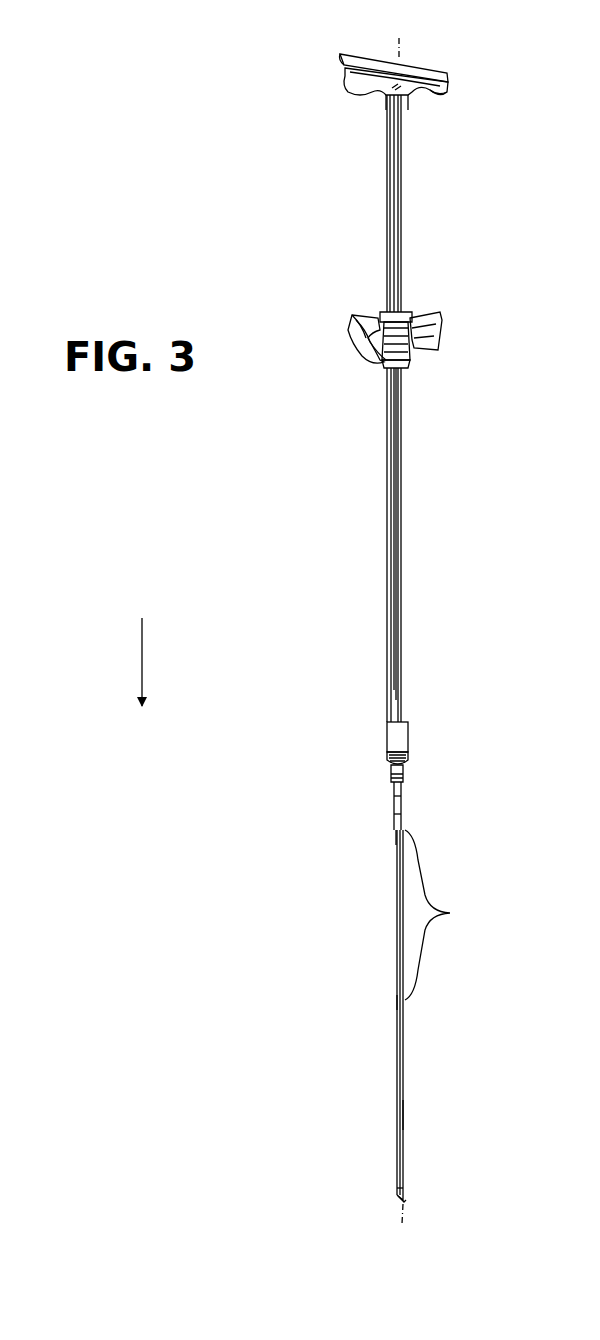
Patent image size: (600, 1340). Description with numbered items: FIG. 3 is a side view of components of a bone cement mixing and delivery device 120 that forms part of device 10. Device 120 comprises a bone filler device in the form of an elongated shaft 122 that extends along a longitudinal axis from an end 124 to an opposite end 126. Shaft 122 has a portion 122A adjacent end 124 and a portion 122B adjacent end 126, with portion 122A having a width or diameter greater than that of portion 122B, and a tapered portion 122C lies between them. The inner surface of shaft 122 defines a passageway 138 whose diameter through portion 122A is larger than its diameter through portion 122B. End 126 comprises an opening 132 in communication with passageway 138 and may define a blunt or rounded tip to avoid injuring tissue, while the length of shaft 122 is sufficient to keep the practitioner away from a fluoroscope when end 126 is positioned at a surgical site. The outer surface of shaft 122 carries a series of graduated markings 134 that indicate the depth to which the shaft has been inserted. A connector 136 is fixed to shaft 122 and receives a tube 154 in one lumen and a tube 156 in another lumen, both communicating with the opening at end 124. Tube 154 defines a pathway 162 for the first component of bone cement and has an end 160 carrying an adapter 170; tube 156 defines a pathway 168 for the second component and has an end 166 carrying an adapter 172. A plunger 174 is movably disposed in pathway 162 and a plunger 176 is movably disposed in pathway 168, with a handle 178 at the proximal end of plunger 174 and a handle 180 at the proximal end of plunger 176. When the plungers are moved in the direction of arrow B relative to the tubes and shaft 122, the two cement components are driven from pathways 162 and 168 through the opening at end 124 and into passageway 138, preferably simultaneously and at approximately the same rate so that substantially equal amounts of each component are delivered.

The device 10 is at (97, 130).
The handle 178 is at (378, 62).
The handle 180 is at (447, 86).
The plunger 174 is at (383, 243).
The plunger 176 is at (408, 243).
The adapter 170 is at (358, 337).
The adapter 172 is at (424, 340).
The end 166 is at (401, 395).
The end 160 is at (392, 393).
The tube 156 is at (399, 606).
The tube 154 is at (391, 600).
The pathway 162 is at (390, 668).
The pathway 168 is at (404, 694).
The bone cement mixing and delivery device 120 is at (328, 677).
The connector 136 is at (413, 744).
The graduated markings 134 is at (391, 794).
The end 124 is at (403, 808).
The portion 122A is at (396, 836).
The elongated shaft 122 is at (392, 913).
The passageway 138 is at (449, 915).
The tapered portion 122C is at (397, 1001).
The portion 122B is at (404, 1116).
The end 126 is at (398, 1190).
The opening 132 is at (406, 1206).